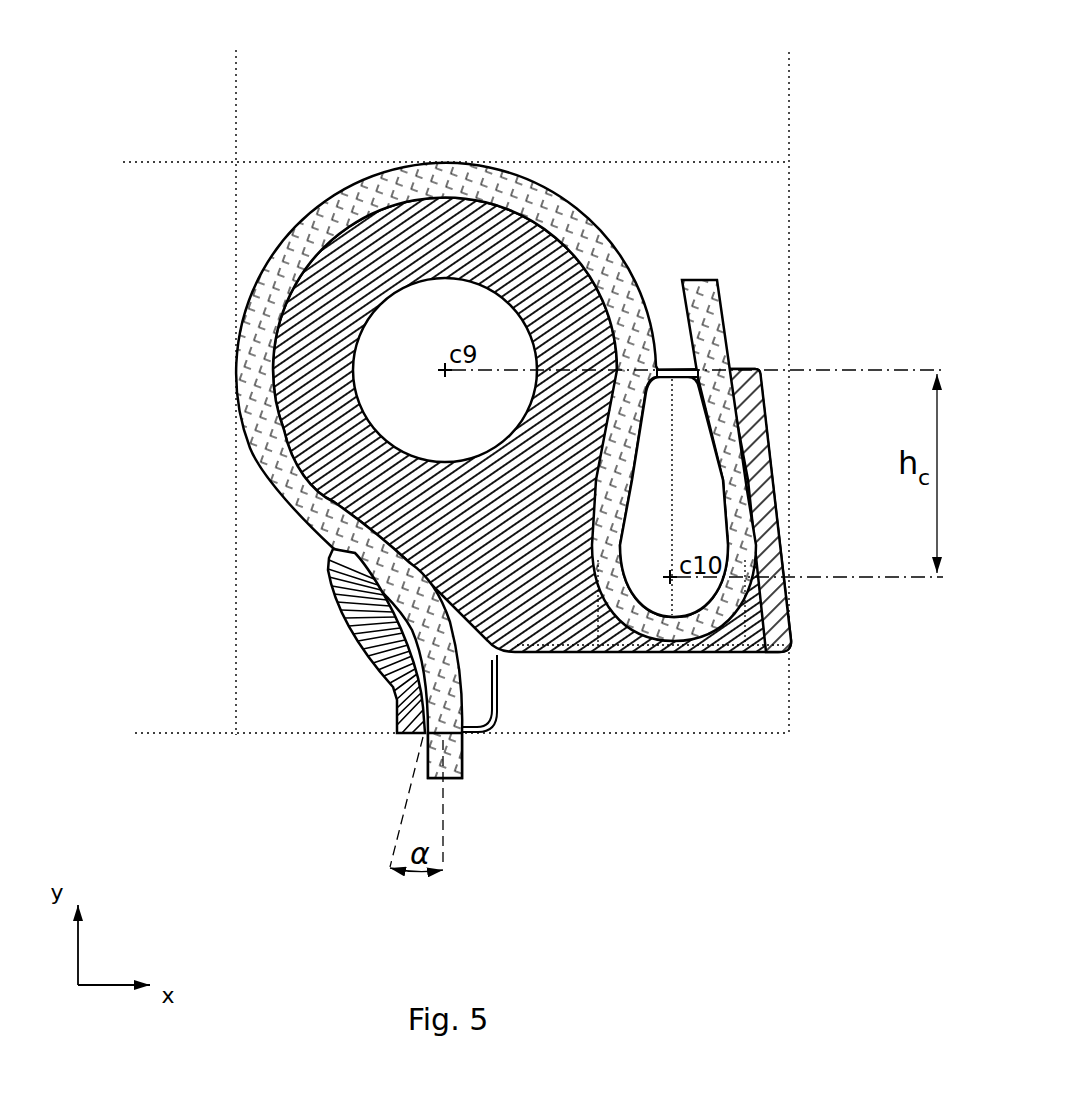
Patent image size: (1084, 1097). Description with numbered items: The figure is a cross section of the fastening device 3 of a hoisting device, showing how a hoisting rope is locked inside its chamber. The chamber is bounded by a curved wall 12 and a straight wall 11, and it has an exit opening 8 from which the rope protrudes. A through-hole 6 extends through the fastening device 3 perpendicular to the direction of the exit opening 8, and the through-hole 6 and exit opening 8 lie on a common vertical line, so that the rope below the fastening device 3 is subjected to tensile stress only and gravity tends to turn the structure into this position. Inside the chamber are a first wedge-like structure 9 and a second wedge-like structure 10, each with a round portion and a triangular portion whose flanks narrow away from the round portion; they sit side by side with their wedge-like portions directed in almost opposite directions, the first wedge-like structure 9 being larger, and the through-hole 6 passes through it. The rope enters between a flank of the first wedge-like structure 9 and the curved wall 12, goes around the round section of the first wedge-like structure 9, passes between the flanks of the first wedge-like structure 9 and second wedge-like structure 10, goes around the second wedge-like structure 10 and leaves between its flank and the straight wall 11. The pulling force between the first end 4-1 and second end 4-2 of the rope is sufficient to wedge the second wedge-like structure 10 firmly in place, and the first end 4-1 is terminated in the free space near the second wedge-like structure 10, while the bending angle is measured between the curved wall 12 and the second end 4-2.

The fastening device 3 is at (770, 800).
The first end of the hoisting rope 4-1 is at (708, 279).
The second end of the hoisting rope 4-2 is at (464, 782).
The through-hole 6 is at (358, 376).
The exit opening 8 is at (476, 737).
The first wedge-like structure 9 is at (446, 228).
The second wedge-like structure 10 is at (683, 607).
The straight wall 11 is at (790, 637).
The curved wall 12 is at (374, 621).